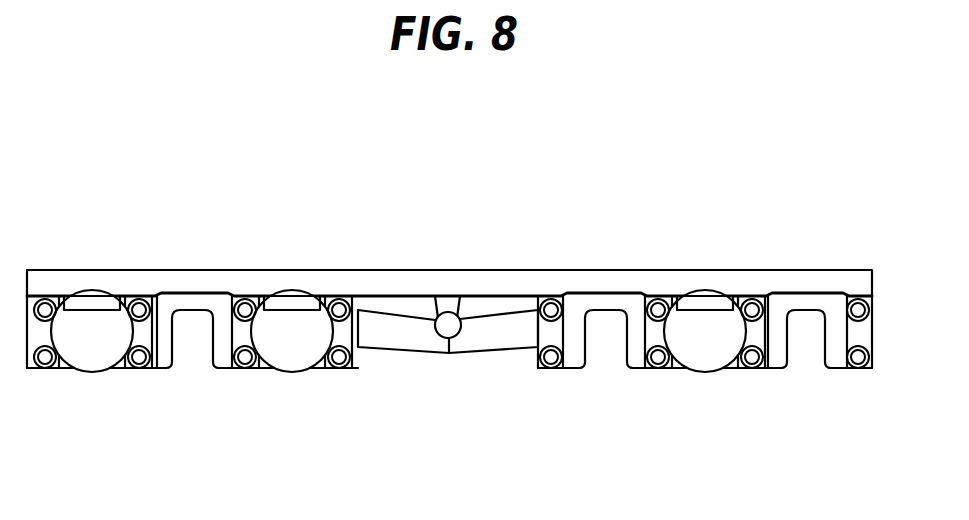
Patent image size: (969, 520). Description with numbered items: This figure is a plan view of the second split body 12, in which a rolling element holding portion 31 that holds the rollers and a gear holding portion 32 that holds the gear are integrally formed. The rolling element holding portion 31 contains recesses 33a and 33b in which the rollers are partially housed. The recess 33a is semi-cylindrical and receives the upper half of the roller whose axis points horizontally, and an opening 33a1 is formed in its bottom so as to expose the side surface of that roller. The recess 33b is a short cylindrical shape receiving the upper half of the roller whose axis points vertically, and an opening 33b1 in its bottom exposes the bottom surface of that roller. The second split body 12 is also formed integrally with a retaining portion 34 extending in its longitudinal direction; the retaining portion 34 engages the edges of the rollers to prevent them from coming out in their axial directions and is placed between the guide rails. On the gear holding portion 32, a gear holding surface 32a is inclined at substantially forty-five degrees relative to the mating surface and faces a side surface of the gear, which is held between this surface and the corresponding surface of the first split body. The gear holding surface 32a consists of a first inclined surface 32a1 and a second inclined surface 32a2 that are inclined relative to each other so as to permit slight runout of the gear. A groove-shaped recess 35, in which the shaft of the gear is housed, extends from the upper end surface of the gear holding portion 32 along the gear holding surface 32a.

The second split body 12 is at (434, 235).
The rolling element holding portion 31 is at (240, 372).
The gear holding portion 32 is at (386, 350).
The gear holding surface 32a is at (518, 431).
The first inclined surface 32a1 is at (489, 330).
The second inclined surface 32a2 is at (414, 330).
The recess 33a is at (837, 348).
The opening 33a1 is at (807, 320).
The recess 33b is at (742, 338).
The opening 33b1 is at (706, 312).
The retaining portion 34 is at (644, 279).
The recess 35 is at (449, 305).